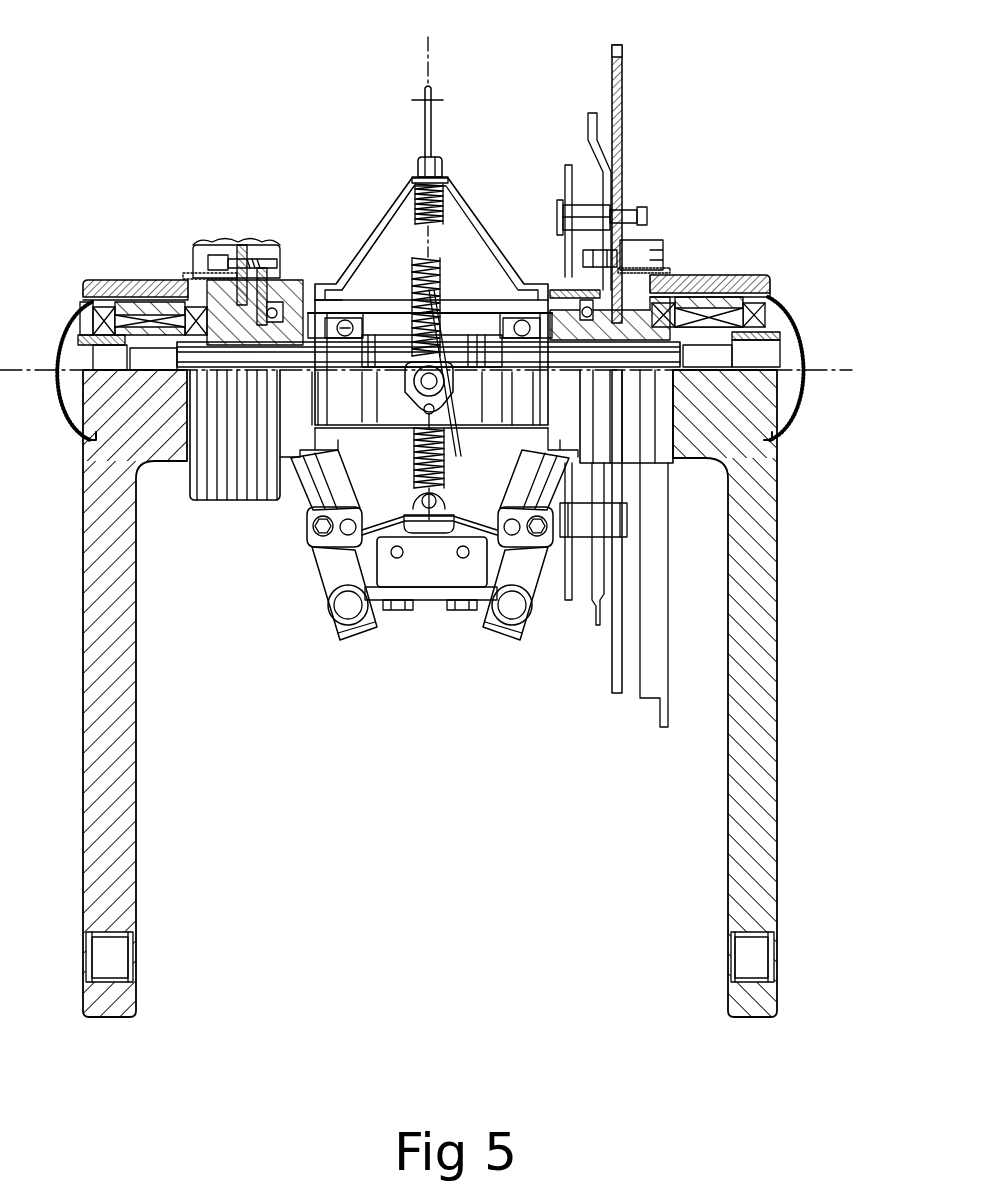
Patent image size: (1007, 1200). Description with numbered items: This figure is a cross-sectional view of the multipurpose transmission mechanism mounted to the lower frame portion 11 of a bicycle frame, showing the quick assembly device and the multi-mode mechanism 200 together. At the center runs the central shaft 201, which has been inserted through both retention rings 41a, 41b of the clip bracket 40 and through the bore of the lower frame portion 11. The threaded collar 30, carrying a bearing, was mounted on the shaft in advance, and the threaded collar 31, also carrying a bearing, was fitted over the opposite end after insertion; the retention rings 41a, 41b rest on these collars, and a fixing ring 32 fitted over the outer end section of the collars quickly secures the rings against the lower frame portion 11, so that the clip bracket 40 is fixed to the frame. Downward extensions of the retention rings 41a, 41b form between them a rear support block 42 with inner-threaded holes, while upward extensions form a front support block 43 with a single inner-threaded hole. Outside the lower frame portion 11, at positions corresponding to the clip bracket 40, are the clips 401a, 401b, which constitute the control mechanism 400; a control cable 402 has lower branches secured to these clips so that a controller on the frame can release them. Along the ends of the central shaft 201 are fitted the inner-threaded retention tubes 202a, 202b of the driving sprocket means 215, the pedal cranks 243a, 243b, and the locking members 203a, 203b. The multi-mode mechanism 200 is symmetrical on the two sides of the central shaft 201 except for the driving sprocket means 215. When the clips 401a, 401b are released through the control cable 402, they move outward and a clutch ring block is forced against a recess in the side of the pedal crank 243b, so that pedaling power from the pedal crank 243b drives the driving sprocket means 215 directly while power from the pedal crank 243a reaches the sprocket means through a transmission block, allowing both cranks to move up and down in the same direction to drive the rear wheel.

The lower frame portion 11 is at (386, 433).
The threaded collar 30 is at (505, 296).
The threaded collar 31 is at (335, 294).
The fixing ring 32 is at (303, 247).
The clip bracket 40 is at (377, 520).
The retention ring 41a is at (310, 522).
The retention ring 41b is at (533, 530).
The rear support block 42 is at (437, 582).
The front support block 43 is at (440, 180).
The multi-mode mechanism 200 is at (233, 227).
The central shaft 201 is at (398, 290).
The inner-threaded retention tube 202a is at (140, 280).
The inner-threaded retention tube 202b is at (772, 292).
The locking member 203a is at (60, 252).
The locking member 203b is at (786, 340).
The driving sprocket means 215 is at (612, 135).
The pedal crank 243a is at (123, 822).
The pedal crank 243b is at (740, 872).
The control mechanism 400 is at (423, 683).
The clip 401a is at (345, 645).
The clip 401b is at (520, 645).
The control cable 402 is at (427, 128).